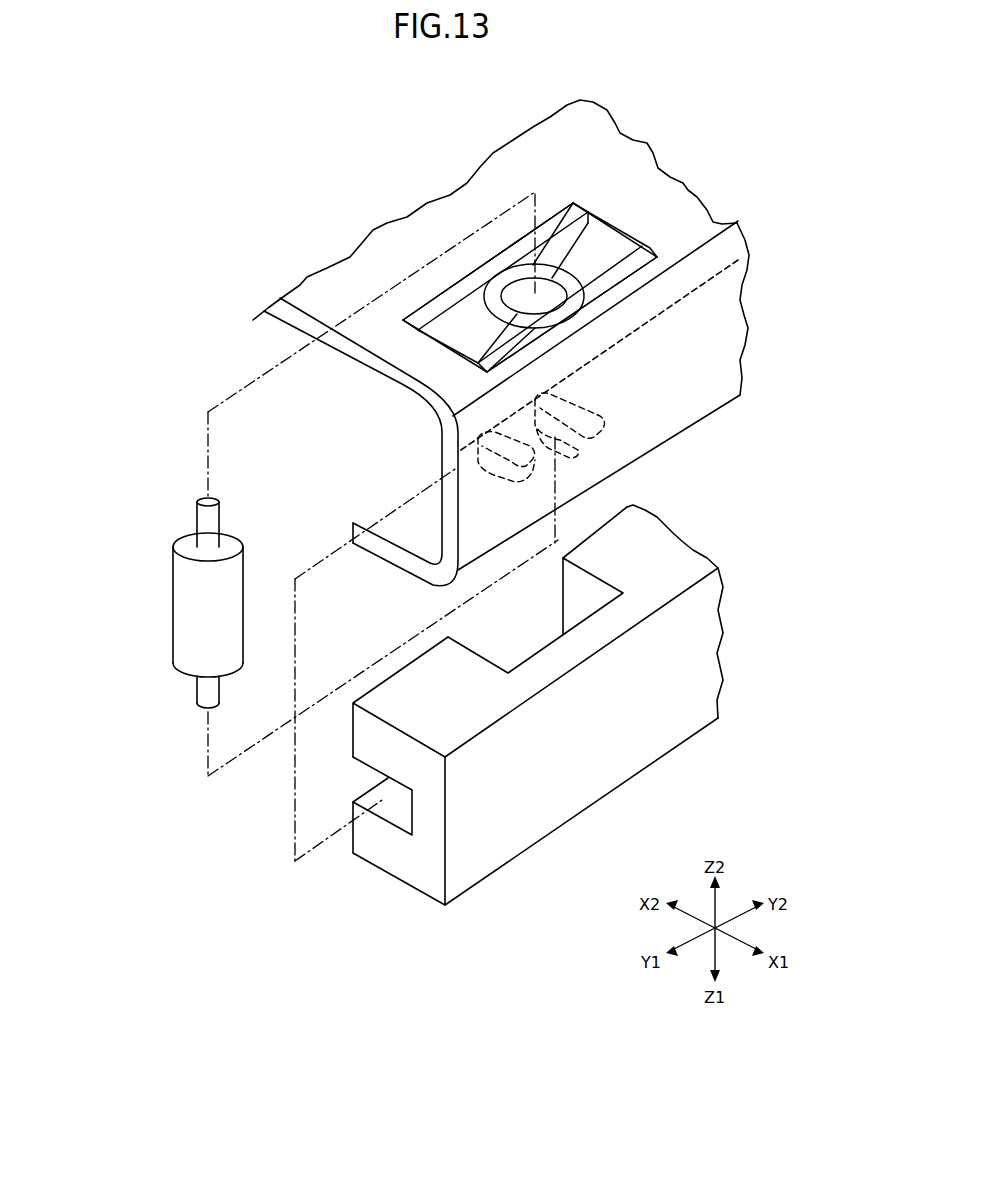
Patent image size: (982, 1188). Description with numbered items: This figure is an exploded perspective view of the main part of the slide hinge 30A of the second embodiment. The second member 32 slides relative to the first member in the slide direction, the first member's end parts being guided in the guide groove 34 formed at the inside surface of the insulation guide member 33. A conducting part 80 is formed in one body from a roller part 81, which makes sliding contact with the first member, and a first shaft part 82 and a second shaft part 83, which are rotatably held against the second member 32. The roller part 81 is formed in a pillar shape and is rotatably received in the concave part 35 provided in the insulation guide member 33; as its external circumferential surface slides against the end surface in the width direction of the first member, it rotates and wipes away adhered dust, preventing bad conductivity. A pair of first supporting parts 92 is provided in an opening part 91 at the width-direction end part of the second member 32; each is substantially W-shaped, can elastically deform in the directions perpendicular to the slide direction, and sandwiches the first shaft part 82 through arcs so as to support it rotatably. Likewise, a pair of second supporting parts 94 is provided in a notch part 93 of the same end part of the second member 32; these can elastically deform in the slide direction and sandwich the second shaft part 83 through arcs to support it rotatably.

The slide hinge 30A is at (300, 275).
The second member 32 is at (687, 216).
The insulation guide member 33 is at (632, 747).
The guide groove 34 is at (385, 822).
The concave part 35 is at (538, 652).
The conducting part 80 is at (169, 595).
The roller part 81 is at (200, 610).
The first shaft part 82 is at (197, 517).
The second shaft part 83 is at (200, 690).
The opening part 91 is at (560, 212).
The first supporting part 92 is at (485, 332).
The notch part 93 is at (598, 390).
The second supporting part 94 is at (540, 478).